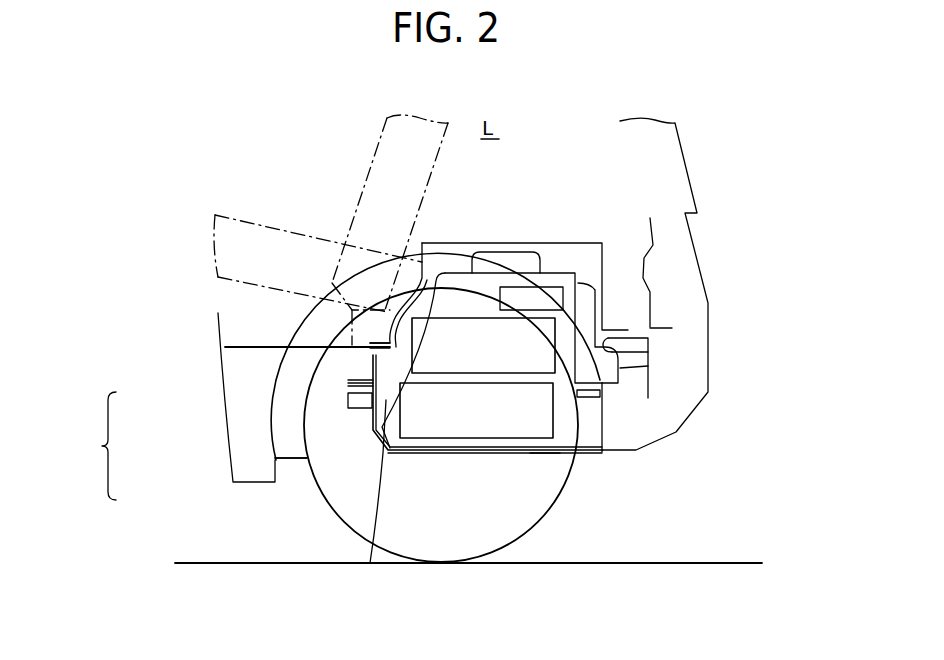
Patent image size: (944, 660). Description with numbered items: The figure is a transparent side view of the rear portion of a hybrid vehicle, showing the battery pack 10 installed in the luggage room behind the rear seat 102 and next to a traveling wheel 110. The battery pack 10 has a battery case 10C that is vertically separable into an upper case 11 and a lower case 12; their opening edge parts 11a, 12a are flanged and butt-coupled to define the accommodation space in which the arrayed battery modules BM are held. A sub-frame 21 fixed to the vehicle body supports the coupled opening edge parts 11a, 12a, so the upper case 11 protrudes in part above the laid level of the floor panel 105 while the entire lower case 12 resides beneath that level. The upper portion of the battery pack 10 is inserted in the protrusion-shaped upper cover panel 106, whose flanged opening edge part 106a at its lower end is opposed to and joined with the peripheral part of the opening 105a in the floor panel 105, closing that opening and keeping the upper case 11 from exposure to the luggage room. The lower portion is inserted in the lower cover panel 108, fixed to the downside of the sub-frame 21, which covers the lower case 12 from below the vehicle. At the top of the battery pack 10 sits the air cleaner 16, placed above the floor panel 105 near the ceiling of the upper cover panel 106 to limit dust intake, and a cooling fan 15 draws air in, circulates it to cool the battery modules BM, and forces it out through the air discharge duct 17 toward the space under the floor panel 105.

The battery pack 10 is at (578, 262).
The battery case 10C is at (82, 446).
The upper case 11 is at (350, 357).
The opening edge part 11a is at (347, 383).
The lower case 12 is at (310, 522).
The opening edge part 12a is at (347, 403).
The cooling fan 15 is at (513, 273).
The air cleaner 16 is at (485, 252).
The air discharge duct 17 is at (648, 366).
The sub-frame 21 is at (360, 412).
The rear seat 102 is at (368, 178).
The floor panel 105 is at (243, 347).
The opening 105a is at (385, 318).
The upper cover panel 106 is at (553, 243).
The flanged opening edge part 106a is at (387, 345).
The lower cover panel 108 is at (528, 455).
The traveling wheel 110 is at (525, 527).
The battery module BM is at (370, 563).